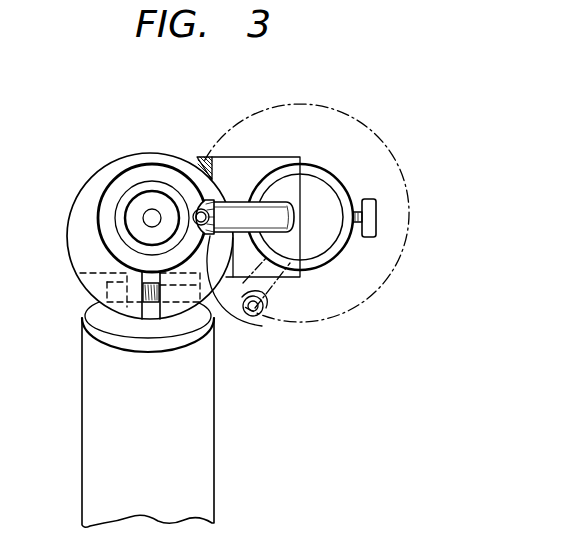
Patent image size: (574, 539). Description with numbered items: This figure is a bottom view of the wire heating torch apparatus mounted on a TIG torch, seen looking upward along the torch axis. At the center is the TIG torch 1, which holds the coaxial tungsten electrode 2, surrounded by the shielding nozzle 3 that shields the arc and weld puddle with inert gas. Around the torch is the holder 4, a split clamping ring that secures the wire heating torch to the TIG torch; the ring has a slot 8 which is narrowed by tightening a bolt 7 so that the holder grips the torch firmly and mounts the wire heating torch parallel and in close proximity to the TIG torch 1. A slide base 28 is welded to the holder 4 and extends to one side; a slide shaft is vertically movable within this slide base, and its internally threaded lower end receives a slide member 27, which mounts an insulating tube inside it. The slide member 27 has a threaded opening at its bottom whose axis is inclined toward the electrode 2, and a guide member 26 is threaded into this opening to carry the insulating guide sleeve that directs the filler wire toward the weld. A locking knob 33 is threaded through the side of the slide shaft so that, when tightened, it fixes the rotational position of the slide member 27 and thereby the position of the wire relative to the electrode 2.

The TIG torch 1 is at (197, 443).
The tungsten electrode 2 is at (150, 210).
The shielding nozzle 3 is at (117, 207).
The holder 4 is at (80, 240).
The bolt 7 is at (90, 288).
The slot 8 is at (150, 312).
The guide member 26 is at (242, 207).
The slide member 27 is at (323, 194).
The slide base 28 is at (230, 168).
The locking knob 33 is at (377, 217).